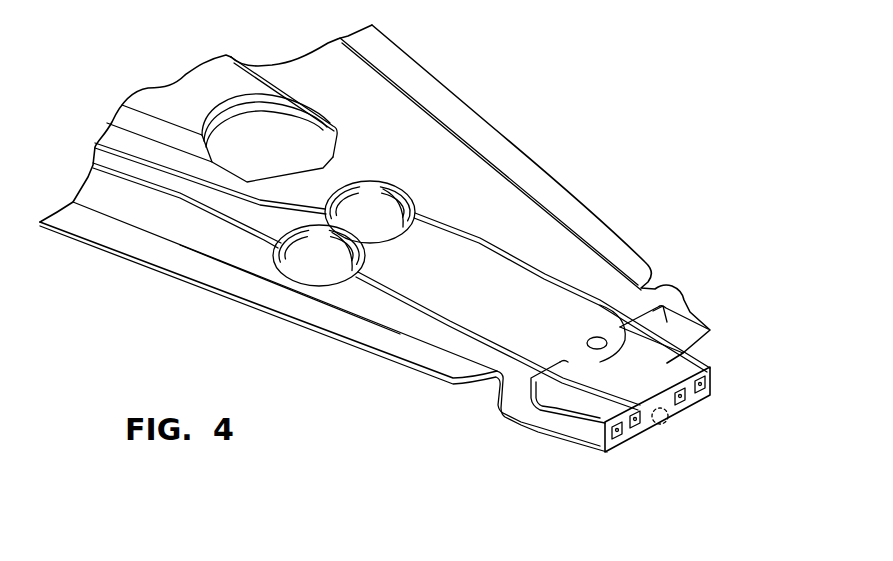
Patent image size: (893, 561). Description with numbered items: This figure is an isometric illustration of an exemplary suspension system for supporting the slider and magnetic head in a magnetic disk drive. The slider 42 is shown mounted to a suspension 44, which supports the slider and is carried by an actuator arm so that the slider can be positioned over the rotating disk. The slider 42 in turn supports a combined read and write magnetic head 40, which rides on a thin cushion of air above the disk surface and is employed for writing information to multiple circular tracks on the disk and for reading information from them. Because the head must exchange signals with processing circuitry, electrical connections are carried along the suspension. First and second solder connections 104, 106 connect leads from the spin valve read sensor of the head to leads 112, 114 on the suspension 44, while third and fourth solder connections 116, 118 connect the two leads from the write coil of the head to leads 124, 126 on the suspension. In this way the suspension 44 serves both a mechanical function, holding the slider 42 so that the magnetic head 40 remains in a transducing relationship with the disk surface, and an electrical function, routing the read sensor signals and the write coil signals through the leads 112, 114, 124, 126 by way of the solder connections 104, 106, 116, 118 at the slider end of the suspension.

The magnetic head 40 is at (670, 424).
The slider 42 is at (557, 441).
The suspension 44 is at (517, 143).
The first solder connection 104 is at (607, 440).
The second solder connection 106 is at (706, 385).
The lead 112 is at (392, 297).
The lead 114 is at (570, 283).
The third solder connection 116 is at (636, 428).
The fourth solder connection 118 is at (686, 405).
The lead 124 is at (437, 310).
The lead 126 is at (493, 242).